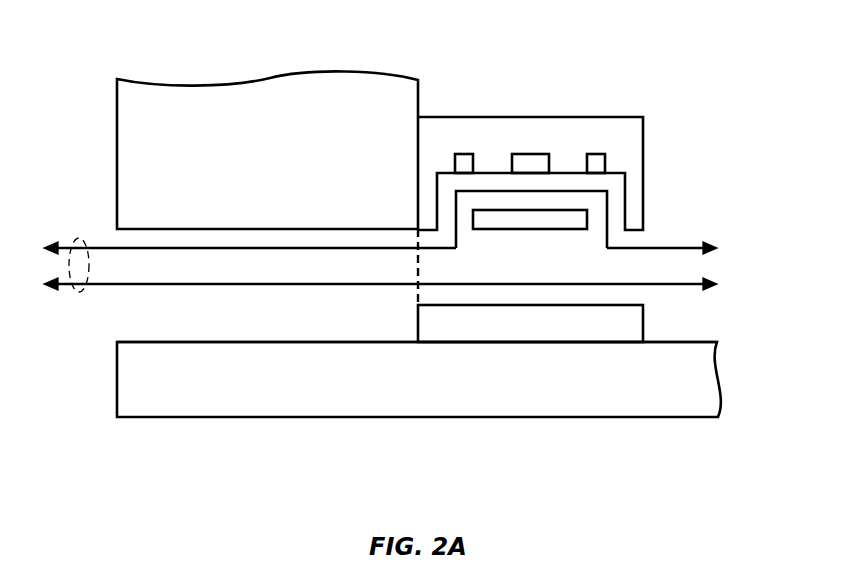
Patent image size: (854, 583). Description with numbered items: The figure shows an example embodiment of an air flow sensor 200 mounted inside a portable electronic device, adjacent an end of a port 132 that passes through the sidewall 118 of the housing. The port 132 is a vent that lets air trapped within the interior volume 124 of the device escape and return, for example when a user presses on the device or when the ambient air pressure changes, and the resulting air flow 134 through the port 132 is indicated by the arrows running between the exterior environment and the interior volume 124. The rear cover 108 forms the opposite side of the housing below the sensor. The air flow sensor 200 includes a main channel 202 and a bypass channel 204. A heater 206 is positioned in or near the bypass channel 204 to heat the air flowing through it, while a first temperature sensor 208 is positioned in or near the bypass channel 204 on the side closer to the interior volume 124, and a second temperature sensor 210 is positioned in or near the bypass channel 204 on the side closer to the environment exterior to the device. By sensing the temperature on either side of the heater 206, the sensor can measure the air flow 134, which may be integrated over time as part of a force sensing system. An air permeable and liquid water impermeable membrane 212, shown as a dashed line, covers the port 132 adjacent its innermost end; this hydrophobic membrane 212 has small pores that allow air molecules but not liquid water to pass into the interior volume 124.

The rear cover 108 is at (151, 417).
The sidewall 118 is at (272, 77).
The interior volume 124 is at (733, 134).
The port 132 is at (249, 317).
The air flow 134 is at (80, 292).
The air flow sensor 200 is at (644, 162).
The main channel 202 is at (542, 257).
The bypass channel 204 is at (615, 202).
The heater 206 is at (535, 153).
The first temperature sensor 208 is at (600, 153).
The second temperature sensor 210 is at (470, 153).
The membrane 212 is at (418, 270).